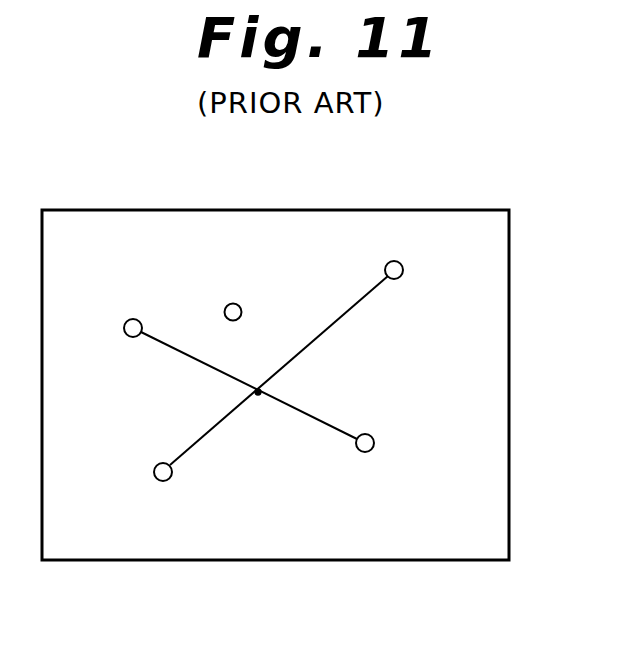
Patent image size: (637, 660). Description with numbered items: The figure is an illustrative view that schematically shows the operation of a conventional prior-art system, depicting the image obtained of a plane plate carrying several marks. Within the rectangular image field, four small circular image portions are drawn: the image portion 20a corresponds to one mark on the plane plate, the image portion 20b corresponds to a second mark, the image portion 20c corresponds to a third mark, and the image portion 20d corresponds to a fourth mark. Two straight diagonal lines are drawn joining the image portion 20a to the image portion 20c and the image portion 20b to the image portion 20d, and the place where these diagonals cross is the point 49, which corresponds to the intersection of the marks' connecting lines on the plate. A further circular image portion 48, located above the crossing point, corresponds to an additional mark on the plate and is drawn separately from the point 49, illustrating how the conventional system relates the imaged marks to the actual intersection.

The image portion 20a is at (137, 319).
The image portion 20b is at (163, 481).
The image portion 20c is at (365, 452).
The image portion 20d is at (394, 261).
The image portion 48 is at (236, 303).
The point 49 is at (258, 392).